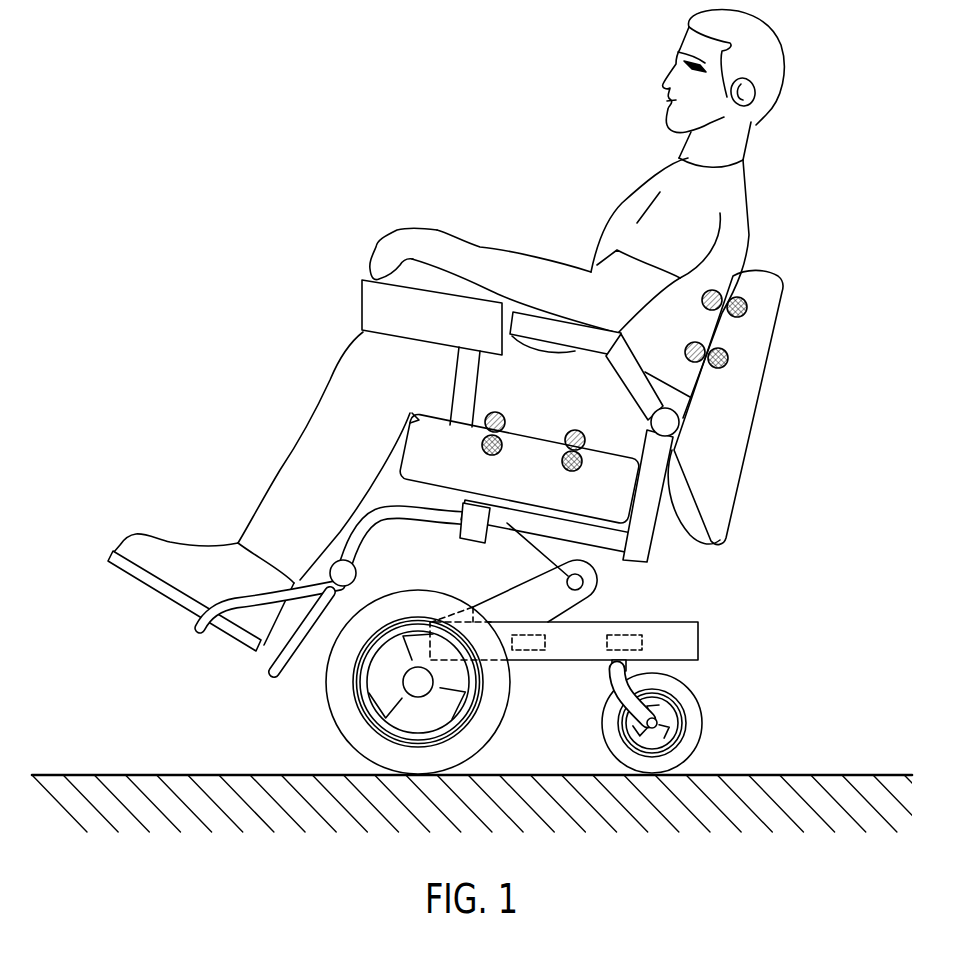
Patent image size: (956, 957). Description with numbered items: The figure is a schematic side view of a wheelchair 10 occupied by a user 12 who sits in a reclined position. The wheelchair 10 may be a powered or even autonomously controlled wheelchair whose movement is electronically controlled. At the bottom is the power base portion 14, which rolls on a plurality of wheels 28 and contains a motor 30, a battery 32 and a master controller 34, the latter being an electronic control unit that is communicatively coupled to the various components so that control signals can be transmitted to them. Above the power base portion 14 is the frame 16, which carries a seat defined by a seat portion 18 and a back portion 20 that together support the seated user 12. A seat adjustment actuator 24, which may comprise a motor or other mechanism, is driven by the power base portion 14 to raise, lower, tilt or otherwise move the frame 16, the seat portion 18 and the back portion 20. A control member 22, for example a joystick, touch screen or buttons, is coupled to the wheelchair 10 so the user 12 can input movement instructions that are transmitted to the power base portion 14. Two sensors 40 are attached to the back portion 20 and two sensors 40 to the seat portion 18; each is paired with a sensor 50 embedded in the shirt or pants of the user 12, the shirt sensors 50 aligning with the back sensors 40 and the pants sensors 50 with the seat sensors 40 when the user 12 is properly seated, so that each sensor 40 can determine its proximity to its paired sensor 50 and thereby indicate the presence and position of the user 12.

The wheelchair 10 is at (256, 286).
The user 12 is at (600, 93).
The power base portion 14 is at (700, 640).
The frame 16 is at (513, 510).
The seat portion 18 is at (415, 447).
The back portion 20 is at (735, 417).
The control member 22 is at (373, 302).
The seat adjustment actuator 24 is at (517, 602).
The wheels 28 is at (343, 705).
The motor 30 is at (462, 603).
The battery 32 is at (627, 632).
The master controller 34 is at (527, 655).
The sensors 40 is at (487, 455).
The sensors 50 is at (500, 411).